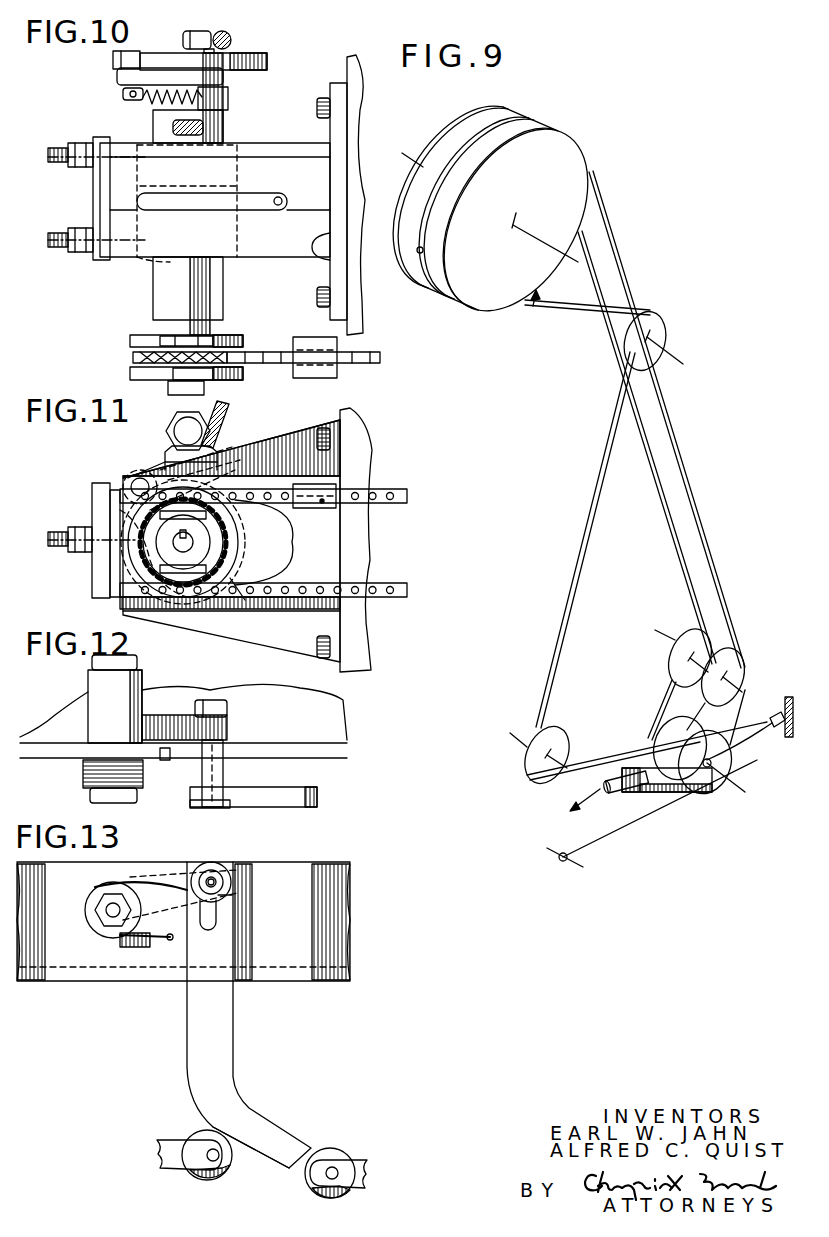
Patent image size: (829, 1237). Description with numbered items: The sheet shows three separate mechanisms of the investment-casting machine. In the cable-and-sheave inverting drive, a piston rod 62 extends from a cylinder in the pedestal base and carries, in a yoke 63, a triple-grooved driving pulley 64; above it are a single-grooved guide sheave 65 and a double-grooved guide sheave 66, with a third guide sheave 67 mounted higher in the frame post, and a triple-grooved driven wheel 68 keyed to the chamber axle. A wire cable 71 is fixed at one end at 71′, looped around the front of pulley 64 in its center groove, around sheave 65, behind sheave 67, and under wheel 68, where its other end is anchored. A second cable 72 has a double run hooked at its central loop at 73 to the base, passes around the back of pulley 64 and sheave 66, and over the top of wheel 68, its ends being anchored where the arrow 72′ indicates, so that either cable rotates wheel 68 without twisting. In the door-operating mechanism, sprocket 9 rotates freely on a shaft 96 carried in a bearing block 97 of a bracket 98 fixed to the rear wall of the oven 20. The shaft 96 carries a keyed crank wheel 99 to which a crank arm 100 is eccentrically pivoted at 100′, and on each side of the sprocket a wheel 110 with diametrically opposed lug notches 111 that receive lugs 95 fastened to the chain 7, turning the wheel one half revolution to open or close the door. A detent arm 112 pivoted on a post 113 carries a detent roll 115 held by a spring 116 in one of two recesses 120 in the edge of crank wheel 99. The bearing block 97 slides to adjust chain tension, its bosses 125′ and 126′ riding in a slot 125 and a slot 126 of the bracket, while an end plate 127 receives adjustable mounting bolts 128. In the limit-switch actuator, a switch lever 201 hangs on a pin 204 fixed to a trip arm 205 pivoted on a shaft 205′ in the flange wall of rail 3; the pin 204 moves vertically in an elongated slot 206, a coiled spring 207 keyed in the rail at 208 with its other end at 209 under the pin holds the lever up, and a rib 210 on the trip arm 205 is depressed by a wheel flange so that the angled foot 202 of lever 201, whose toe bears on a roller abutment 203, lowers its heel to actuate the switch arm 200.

In FIG. 12, the rail 3 is at (338, 743).
In FIG. 13, the rail 3 is at (328, 910).
In FIG. 10, the chain 7 is at (258, 354).
In FIG. 11, the chain 7 is at (407, 497).
In FIG. 10, the sprocket 9 is at (133, 358).
In FIG. 11, the sprocket 9 is at (196, 545).
In FIG. 10, the oven 20 is at (357, 112).
In FIG. 11, the oven 20 is at (350, 456).
In FIG. 9, the piston rod 62 is at (637, 797).
In FIG. 9, the yoke 63 is at (690, 792).
In FIG. 9, the driving pulley 64 is at (712, 786).
In FIG. 9, the guide sheave 65 is at (556, 740).
In FIG. 9, the guide sheave 66 is at (745, 665).
In FIG. 9, the third guide sheave 67 is at (672, 334).
In FIG. 9, the driven wheel 68 is at (505, 297).
In FIG. 9, the wire cable 71 is at (592, 306).
In FIG. 9, the cable fixed end 71′ is at (562, 862).
In FIG. 9, the second cable 72 is at (697, 523).
In FIG. 9, the arrow indicating cable end anchorage 72′ is at (530, 310).
In FIG. 9, the loop hook point 73 is at (780, 740).
In FIG. 10, the lugs 95 is at (315, 378).
In FIG. 11, the lugs 95 is at (338, 490).
In FIG. 10, the shaft 96 is at (188, 395).
In FIG. 11, the shaft 96 is at (200, 550).
In FIG. 10, the bearing block 97 is at (240, 233).
In FIG. 10, the bracket 98 is at (315, 245).
In FIG. 10, the crank wheel 99 is at (268, 62).
In FIG. 11, the crank wheel 99 is at (180, 612).
In FIG. 10, the crank arm 100 is at (232, 40).
In FIG. 11, the crank arm 100 is at (230, 410).
In FIG. 10, the eccentric pivot 100′ is at (192, 42).
In FIG. 11, the eccentric pivot 100′ is at (218, 462).
In FIG. 10, the wheel 110 is at (145, 336).
In FIG. 11, the wheel 110 is at (226, 563).
In FIG. 10, the lug notches 111 is at (200, 343).
In FIG. 11, the lug notches 111 is at (210, 537).
In FIG. 10, the detent arm 112 is at (117, 78).
In FIG. 11, the detent arm 112 is at (150, 461).
In FIG. 10, the post 113 is at (223, 103).
In FIG. 11, the post 113 is at (172, 455).
In FIG. 10, the detent roll 115 is at (113, 61).
In FIG. 11, the detent roll 115 is at (122, 487).
In FIG. 10, the spring 116 is at (143, 100).
In FIG. 11, the spring 116 is at (122, 605).
In FIG. 11, the recesses 120 is at (112, 516).
In FIG. 10, the slot 125 is at (283, 197).
In FIG. 10, the bosses 125′ is at (212, 180).
In FIG. 11, the bosses 125′ is at (236, 478).
In FIG. 11, the slot 126 is at (285, 541).
In FIG. 10, the bosses 126′ is at (162, 262).
In FIG. 10, the end plate 127 is at (93, 179).
In FIG. 11, the end plate 127 is at (95, 578).
In FIG. 10, the adjustable mounting bolts 128 is at (72, 145).
In FIG. 11, the adjustable mounting bolts 128 is at (66, 548).
In FIG. 13, the switch arm 200 is at (232, 1172).
In FIG. 12, the switch lever 201 is at (226, 807).
In FIG. 13, the switch lever 201 is at (233, 1012).
In FIG. 12, the angled foot 202 is at (292, 794).
In FIG. 13, the angled foot 202 is at (290, 1140).
In FIG. 13, the roller abutment 203 is at (340, 1152).
In FIG. 12, the pin 204 is at (200, 795).
In FIG. 13, the pin 204 is at (212, 882).
In FIG. 12, the trip arm 205 is at (92, 685).
In FIG. 13, the trip arm 205 is at (205, 862).
In FIG. 13, the shaft 205′ is at (110, 911).
In FIG. 13, the elongated slot 206 is at (218, 916).
In FIG. 12, the coiled spring 207 is at (95, 783).
In FIG. 13, the coiled spring 207 is at (160, 880).
In FIG. 12, the spring keying opening 208 is at (165, 762).
In FIG. 13, the spring keying opening 208 is at (170, 940).
In FIG. 12, the spring end 209 is at (220, 786).
In FIG. 13, the spring end 209 is at (225, 895).
In FIG. 12, the rib 210 is at (227, 735).